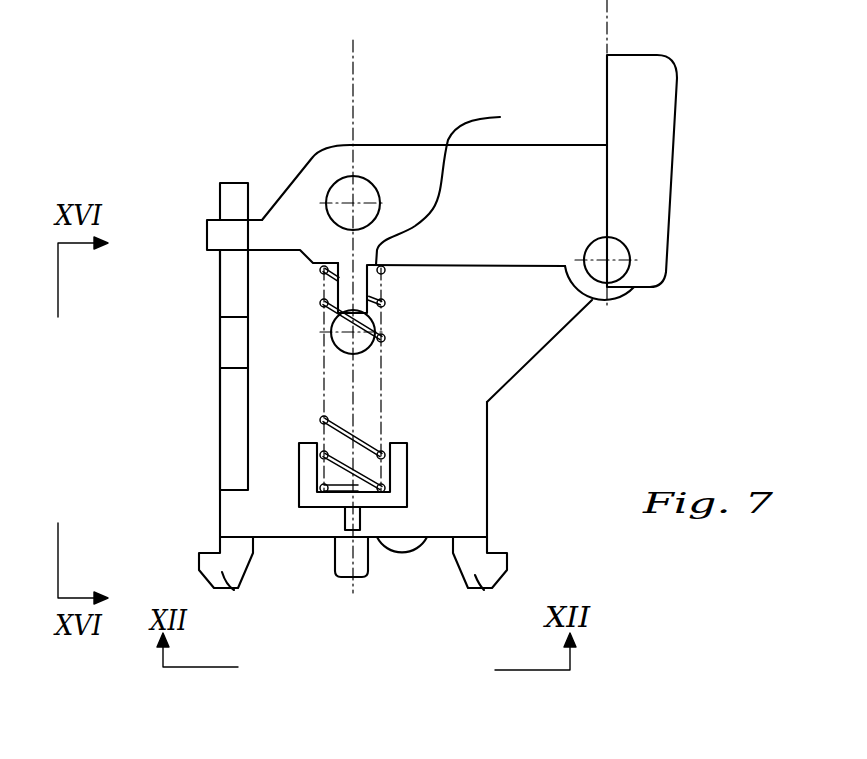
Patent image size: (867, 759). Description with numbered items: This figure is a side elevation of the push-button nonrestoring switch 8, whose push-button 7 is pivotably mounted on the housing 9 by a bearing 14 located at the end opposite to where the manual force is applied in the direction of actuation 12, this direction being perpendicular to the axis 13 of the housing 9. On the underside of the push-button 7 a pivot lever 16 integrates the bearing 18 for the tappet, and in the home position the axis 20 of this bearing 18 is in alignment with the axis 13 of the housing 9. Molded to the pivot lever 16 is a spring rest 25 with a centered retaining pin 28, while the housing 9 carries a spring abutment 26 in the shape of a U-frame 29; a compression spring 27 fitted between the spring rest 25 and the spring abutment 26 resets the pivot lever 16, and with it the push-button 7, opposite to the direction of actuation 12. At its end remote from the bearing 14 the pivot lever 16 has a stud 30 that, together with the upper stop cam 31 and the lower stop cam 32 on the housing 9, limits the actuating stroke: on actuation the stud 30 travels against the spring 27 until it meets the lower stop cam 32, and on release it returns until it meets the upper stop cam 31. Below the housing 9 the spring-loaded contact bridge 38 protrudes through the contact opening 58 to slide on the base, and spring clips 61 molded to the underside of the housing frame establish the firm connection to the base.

The push-button 7 is at (675, 147).
The push-button nonrestoring switch 8 is at (630, 331).
The housing 9 is at (487, 437).
The direction of actuation 12 is at (690, 78).
The axis of housing 13 is at (353, 387).
The bearing 14 is at (615, 252).
The pivot lever 16 is at (400, 145).
The bearing 18 is at (350, 200).
The axis of bearing 20 is at (351, 82).
The spring rest 25 is at (447, 187).
The spring abutment 26 is at (370, 493).
The spring 27 is at (325, 387).
The retaining pin 28 is at (350, 296).
The U-frame 29 is at (432, 471).
The stud 30 is at (209, 238).
The upper stop cam 31 is at (237, 213).
The lower stop cam 32 is at (234, 316).
The contact bridge 38 is at (410, 552).
The contact opening 58 is at (305, 562).
The spring clips 61 is at (232, 592).